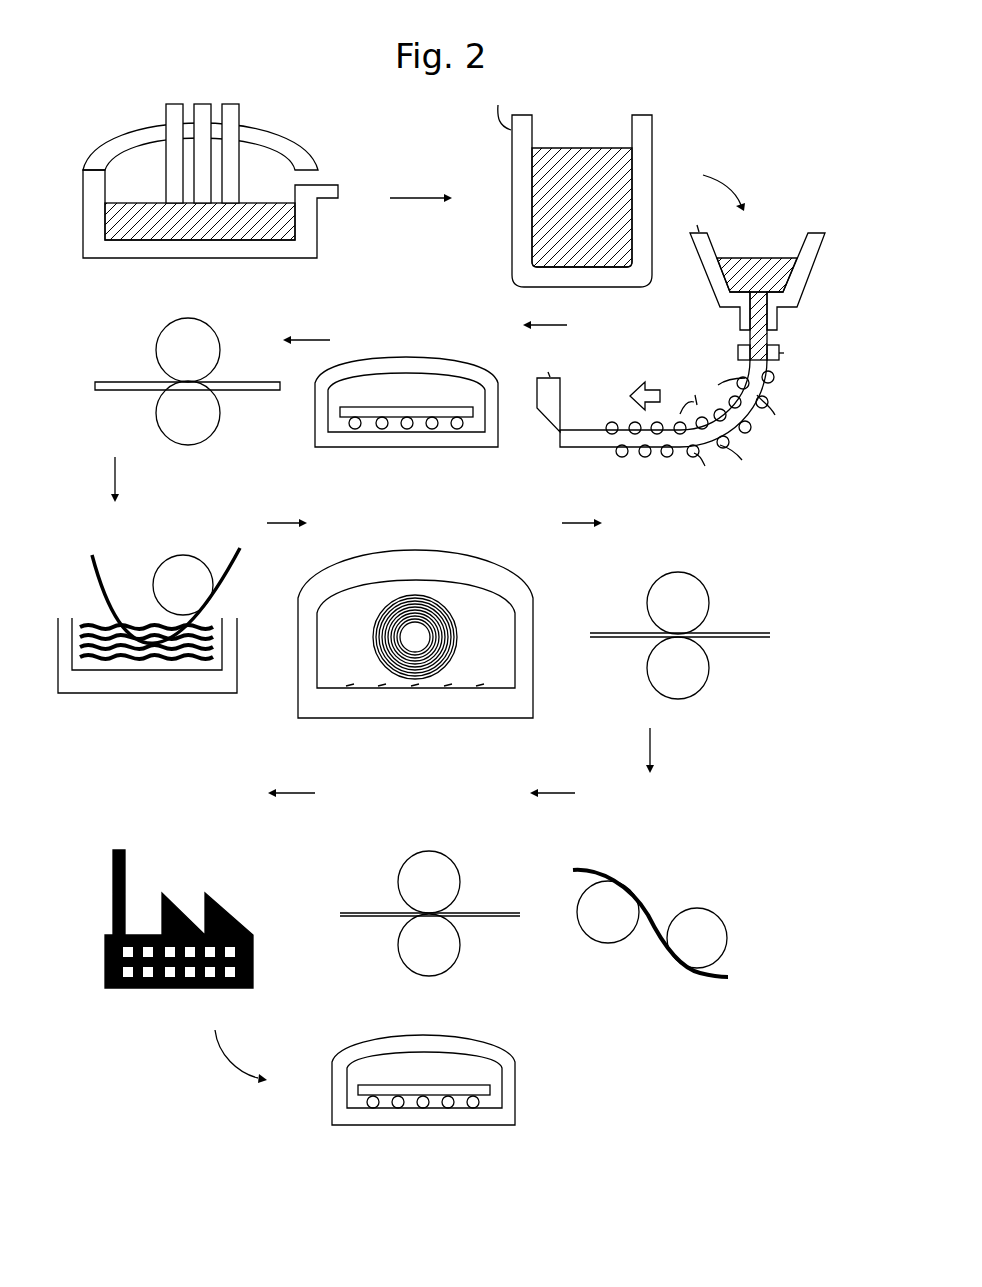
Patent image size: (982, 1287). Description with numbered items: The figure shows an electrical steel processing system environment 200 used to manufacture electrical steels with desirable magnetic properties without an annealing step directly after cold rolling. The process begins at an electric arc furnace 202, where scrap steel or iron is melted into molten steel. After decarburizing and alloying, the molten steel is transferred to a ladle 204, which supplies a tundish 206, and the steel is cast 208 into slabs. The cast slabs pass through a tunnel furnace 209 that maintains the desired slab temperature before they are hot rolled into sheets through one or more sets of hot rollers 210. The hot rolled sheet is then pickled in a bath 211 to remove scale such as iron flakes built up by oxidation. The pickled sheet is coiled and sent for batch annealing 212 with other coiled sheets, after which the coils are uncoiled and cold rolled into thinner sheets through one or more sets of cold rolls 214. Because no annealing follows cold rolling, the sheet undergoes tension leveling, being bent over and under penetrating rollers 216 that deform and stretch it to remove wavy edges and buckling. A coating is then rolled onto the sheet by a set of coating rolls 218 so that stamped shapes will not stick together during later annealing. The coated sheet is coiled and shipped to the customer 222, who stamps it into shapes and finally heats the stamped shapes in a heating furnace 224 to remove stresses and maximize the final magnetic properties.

The electrical steel processing system environment 200 is at (113, 70).
The electric arc furnace 202 is at (274, 132).
The ladle 204 is at (636, 121).
The tundish 206 is at (777, 325).
The casting 208 is at (664, 413).
The tunnel furnace 209 is at (497, 350).
The hot rollers 210 is at (228, 320).
The pickling bath 211 is at (178, 523).
The batch annealing 212 is at (498, 567).
The cold rolls 214 is at (716, 583).
The penetrating rollers 216 is at (658, 870).
The coating rolls 218 is at (467, 862).
The customer 222 is at (207, 852).
The heating furnace 224 is at (510, 1033).